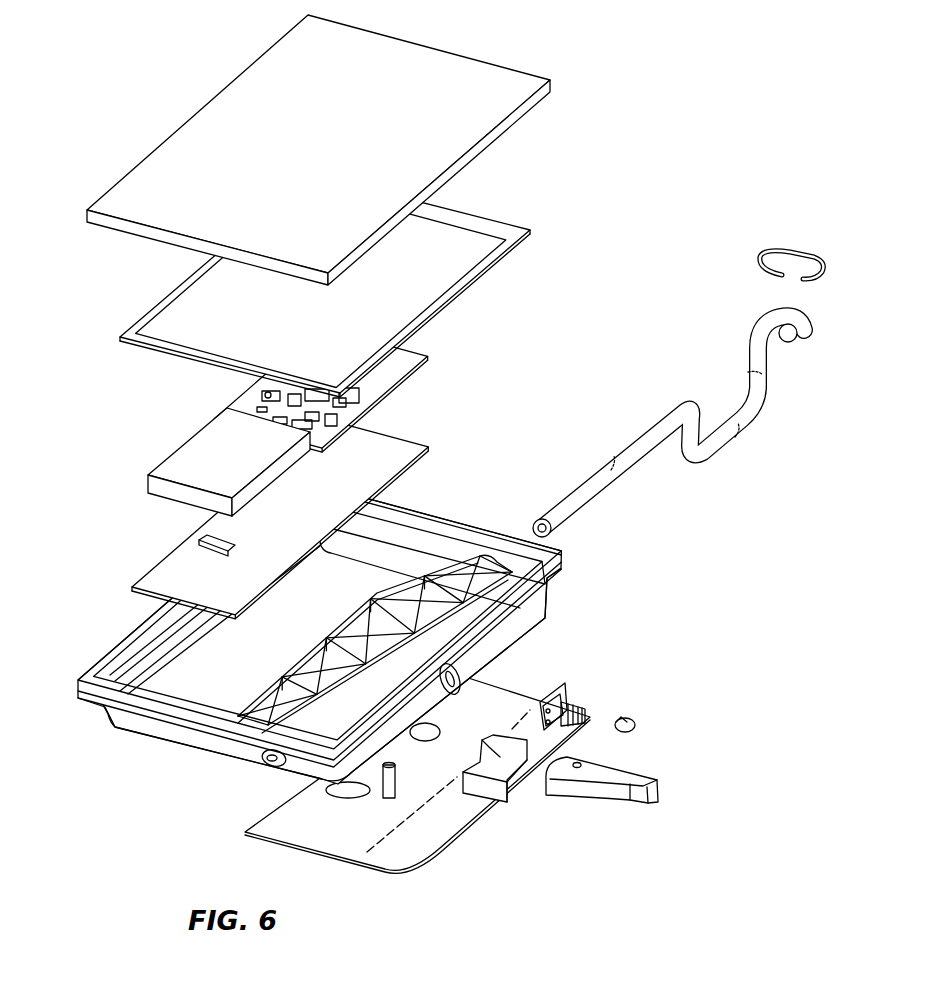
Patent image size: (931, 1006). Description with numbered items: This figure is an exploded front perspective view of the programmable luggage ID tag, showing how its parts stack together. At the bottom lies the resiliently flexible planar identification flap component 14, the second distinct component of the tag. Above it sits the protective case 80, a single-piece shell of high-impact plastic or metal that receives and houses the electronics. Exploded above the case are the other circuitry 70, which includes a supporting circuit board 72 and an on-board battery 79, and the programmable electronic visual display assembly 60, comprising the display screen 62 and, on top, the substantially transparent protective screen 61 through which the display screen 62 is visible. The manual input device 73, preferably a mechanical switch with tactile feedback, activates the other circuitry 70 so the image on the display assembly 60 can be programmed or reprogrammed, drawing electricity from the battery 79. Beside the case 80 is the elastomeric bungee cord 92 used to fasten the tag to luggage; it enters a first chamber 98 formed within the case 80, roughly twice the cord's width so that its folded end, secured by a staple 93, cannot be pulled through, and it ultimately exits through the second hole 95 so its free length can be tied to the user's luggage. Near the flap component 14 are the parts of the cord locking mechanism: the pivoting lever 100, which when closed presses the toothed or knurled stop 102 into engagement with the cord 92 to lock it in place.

The identification flap component 14 is at (477, 856).
The electronic visual display assembly 60 is at (287, 205).
The protective screen 61 is at (431, 47).
The display screen 62 is at (474, 216).
The other circuitry 70 is at (267, 473).
The supporting circuit board 72 is at (404, 380).
The battery 79 is at (214, 462).
The protective case 80 is at (319, 655).
The cord 92 is at (765, 322).
The staple 93 is at (765, 251).
The second hole 95 is at (272, 769).
The first chamber 98 is at (336, 723).
The manual input device 73 is at (628, 717).
The pivoting lever 100 is at (634, 770).
The stop 102 is at (488, 790).